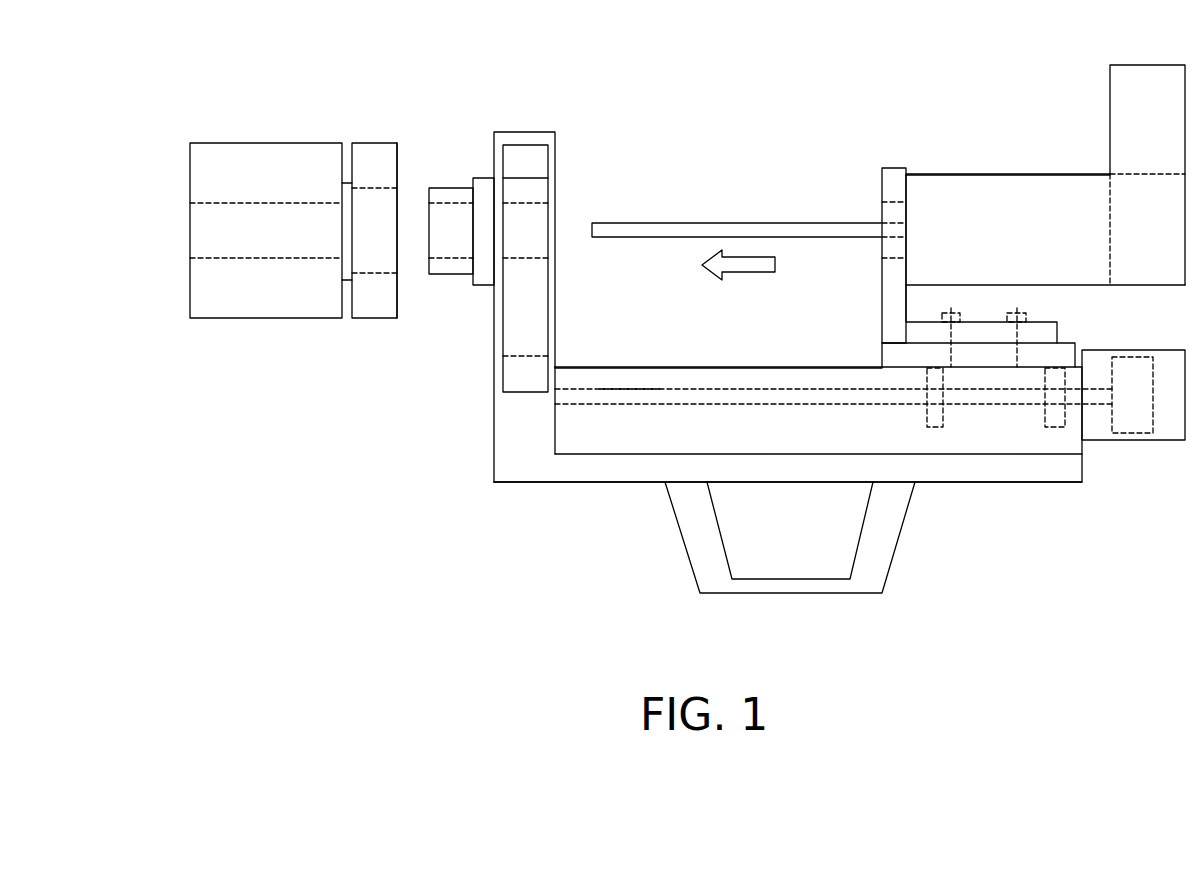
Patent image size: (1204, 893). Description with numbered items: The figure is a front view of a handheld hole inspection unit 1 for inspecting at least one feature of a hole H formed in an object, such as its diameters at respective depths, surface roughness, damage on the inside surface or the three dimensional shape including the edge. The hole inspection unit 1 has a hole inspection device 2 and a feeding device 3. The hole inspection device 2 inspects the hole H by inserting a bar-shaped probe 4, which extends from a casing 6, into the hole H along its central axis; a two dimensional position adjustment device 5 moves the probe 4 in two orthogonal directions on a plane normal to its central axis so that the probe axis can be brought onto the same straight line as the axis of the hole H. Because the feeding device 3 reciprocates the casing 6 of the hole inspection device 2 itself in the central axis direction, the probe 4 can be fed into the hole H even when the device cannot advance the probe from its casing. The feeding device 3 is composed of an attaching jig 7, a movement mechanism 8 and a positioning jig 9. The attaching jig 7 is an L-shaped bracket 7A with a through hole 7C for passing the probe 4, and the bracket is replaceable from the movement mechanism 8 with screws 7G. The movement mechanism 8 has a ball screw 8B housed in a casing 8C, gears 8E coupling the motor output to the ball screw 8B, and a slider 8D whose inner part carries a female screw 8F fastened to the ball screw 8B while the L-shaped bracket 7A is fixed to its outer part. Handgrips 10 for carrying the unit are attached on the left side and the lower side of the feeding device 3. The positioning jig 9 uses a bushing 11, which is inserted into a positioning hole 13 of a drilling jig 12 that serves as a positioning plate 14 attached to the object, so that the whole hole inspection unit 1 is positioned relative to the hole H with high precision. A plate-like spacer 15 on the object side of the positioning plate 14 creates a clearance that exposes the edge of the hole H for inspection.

The hole inspection unit 1 is at (371, 484).
The hole inspection device 2 is at (1008, 176).
The feeding device 3 is at (495, 456).
The probe 4 is at (735, 228).
The two dimensional position adjustment device 5 is at (1120, 122).
The casing 6 is at (942, 183).
The attaching jig 7 is at (880, 180).
The L-shaped bracket 7A is at (890, 300).
The through hole 7C is at (878, 215).
The screws 7G is at (1018, 318).
The movement mechanism 8 is at (688, 367).
The ball screw 8B is at (750, 390).
The casing 8C is at (627, 375).
The slider 8D is at (913, 360).
The gears 8E is at (1142, 348).
The female screw 8F is at (943, 407).
The positioning jig 9 is at (453, 188).
The handgrip 10 is at (537, 195).
The bushing 11 is at (453, 268).
The drilling jig 12 is at (370, 310).
The positioning hole 13 is at (390, 260).
The positioning plate 14 is at (370, 143).
The plate-like spacer 15 is at (348, 300).
The hole H is at (216, 232).